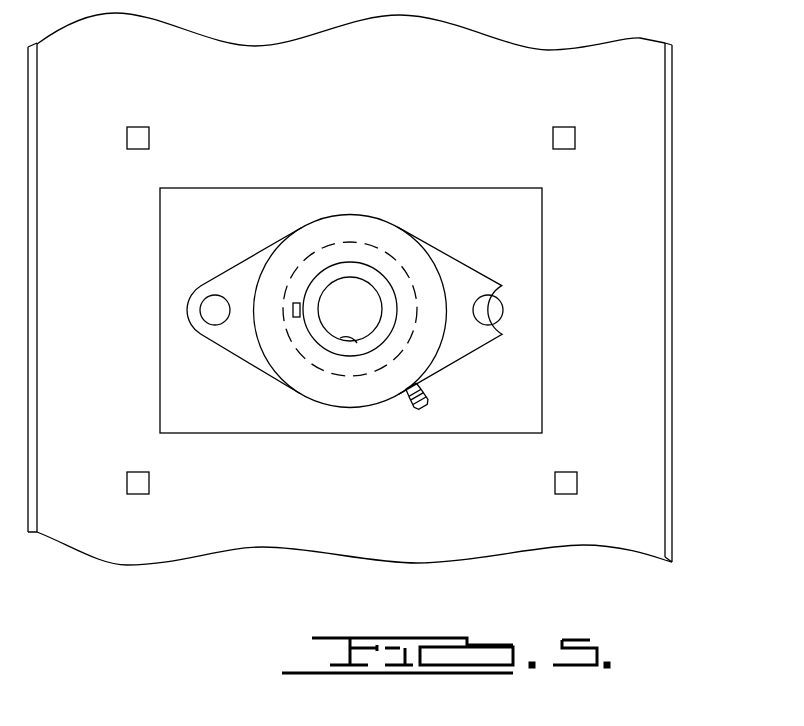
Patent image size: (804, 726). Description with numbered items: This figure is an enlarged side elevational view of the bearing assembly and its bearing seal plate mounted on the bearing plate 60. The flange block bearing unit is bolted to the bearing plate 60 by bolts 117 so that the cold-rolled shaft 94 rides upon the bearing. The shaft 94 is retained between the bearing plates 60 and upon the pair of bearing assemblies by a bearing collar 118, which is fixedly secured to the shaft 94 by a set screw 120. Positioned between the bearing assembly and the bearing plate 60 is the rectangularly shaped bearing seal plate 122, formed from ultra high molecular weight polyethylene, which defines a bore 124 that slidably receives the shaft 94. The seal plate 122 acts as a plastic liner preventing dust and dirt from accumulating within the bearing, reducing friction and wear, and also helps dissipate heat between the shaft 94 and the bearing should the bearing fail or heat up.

The bearing plate 60 is at (650, 82).
The shaft 94 is at (351, 292).
The bolts 117 is at (492, 310).
The bearing collars 118 is at (326, 277).
The set screw 120 is at (298, 318).
The bearing seal plate 122 is at (477, 200).
The bore 124 is at (357, 343).